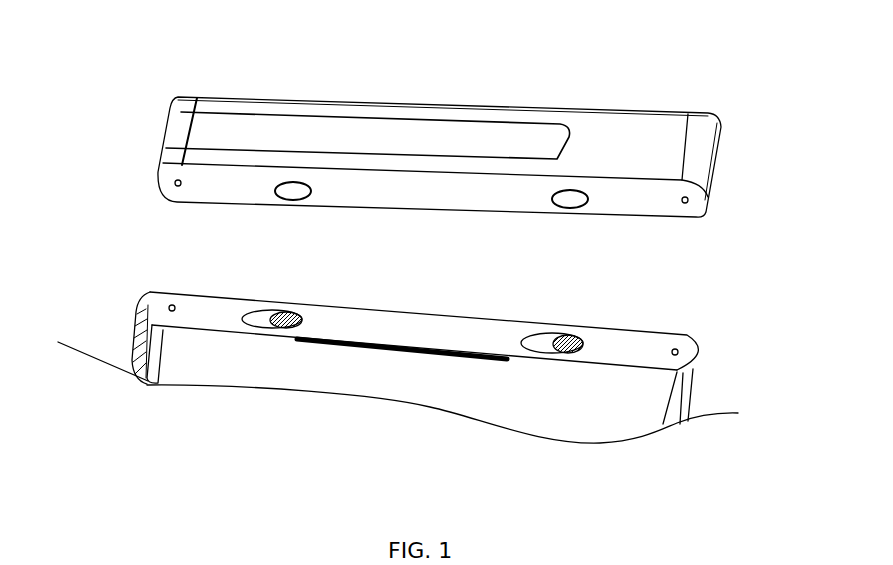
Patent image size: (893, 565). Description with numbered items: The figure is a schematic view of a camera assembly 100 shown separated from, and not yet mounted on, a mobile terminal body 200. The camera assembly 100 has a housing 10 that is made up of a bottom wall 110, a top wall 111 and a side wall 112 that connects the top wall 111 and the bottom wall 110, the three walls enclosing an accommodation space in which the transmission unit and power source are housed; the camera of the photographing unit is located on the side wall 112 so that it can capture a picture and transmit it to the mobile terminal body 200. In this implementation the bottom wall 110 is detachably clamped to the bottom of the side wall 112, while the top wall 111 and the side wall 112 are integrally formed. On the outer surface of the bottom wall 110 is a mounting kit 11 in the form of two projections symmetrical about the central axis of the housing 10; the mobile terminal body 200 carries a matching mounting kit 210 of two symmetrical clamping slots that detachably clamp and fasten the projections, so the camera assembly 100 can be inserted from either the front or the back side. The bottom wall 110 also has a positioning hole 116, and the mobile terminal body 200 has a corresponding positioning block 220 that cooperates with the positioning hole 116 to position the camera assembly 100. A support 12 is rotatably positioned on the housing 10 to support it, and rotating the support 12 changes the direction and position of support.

The housing 10 is at (612, 47).
The camera assembly 100 is at (712, 149).
The bottom wall 110 is at (593, 197).
The top wall 111 is at (478, 105).
The side wall 112 is at (647, 155).
The positioning hole 116 is at (683, 203).
The mounting kit 11 is at (291, 193).
The support 12 is at (225, 133).
The mobile terminal body 200 is at (603, 402).
The mounting kit 210 is at (268, 310).
The positioning block 220 is at (670, 338).